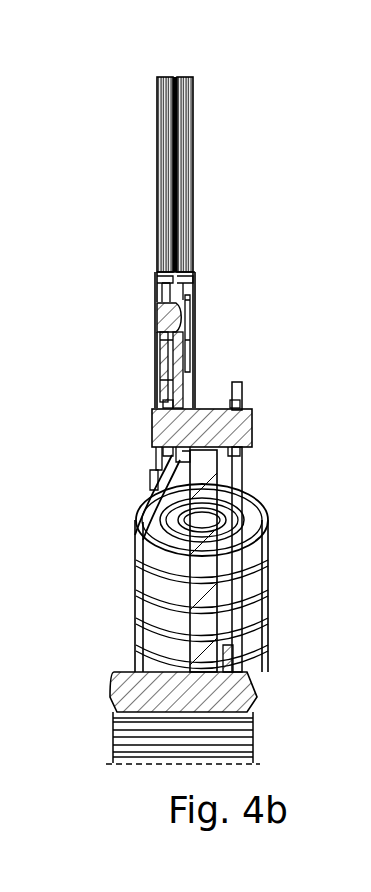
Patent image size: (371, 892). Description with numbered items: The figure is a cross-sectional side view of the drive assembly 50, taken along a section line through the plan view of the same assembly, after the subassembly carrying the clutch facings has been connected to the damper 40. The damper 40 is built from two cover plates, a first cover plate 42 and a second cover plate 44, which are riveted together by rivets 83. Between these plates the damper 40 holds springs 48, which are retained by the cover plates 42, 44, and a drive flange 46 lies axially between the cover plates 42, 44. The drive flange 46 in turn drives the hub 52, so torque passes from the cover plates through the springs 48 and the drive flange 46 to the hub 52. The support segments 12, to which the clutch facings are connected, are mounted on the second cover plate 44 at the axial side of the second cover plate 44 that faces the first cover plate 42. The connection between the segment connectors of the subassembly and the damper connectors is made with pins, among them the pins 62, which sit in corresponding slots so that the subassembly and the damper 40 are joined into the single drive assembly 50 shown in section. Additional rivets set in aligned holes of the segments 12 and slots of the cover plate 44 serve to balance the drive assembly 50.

The drive assembly 50 is at (270, 125).
The damper 40 is at (168, 157).
The support segments 12 is at (180, 233).
The second cover plate 44 is at (155, 353).
The pins 62 is at (157, 316).
The first cover plate 42 is at (237, 393).
The rivets 83 is at (248, 421).
The drive flange 46 is at (200, 480).
The springs 48 is at (253, 512).
The hub 52 is at (125, 680).